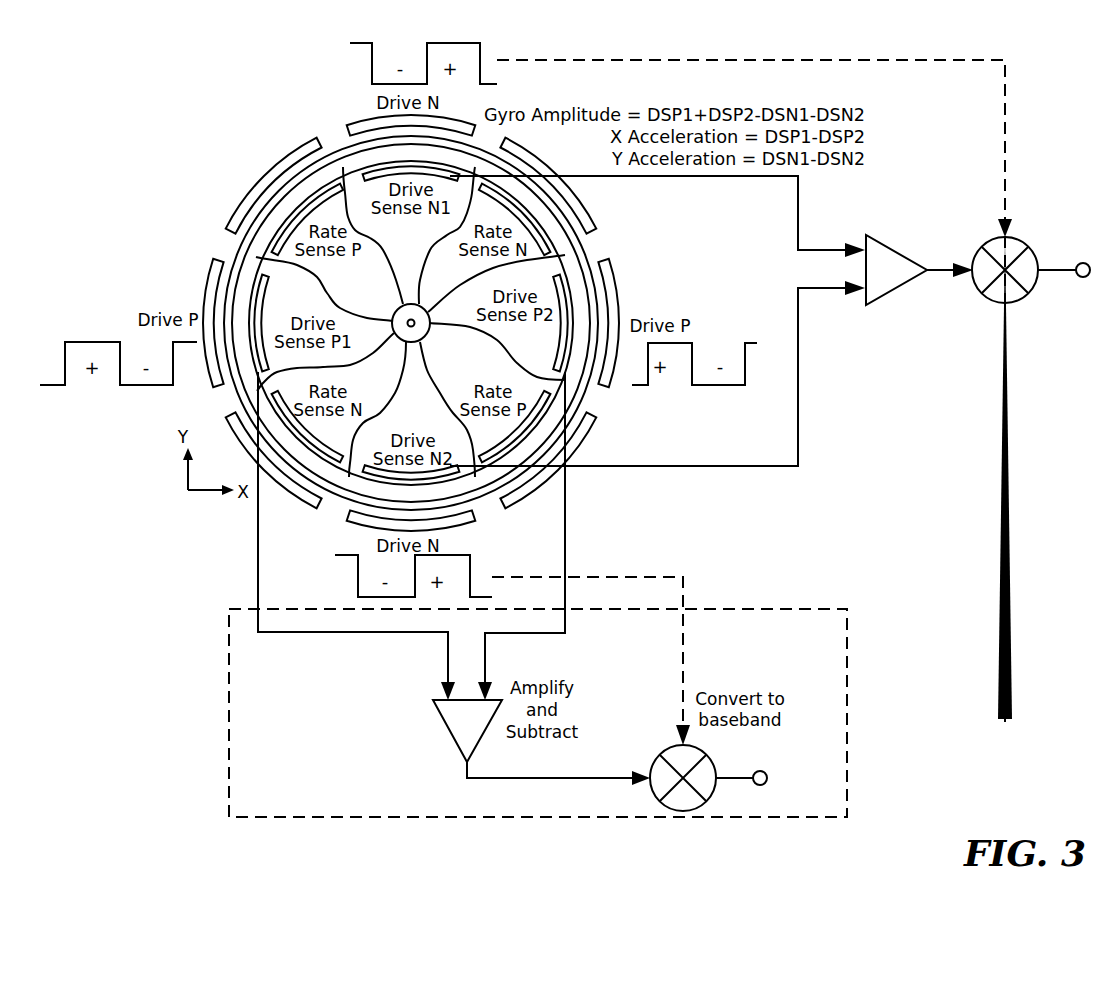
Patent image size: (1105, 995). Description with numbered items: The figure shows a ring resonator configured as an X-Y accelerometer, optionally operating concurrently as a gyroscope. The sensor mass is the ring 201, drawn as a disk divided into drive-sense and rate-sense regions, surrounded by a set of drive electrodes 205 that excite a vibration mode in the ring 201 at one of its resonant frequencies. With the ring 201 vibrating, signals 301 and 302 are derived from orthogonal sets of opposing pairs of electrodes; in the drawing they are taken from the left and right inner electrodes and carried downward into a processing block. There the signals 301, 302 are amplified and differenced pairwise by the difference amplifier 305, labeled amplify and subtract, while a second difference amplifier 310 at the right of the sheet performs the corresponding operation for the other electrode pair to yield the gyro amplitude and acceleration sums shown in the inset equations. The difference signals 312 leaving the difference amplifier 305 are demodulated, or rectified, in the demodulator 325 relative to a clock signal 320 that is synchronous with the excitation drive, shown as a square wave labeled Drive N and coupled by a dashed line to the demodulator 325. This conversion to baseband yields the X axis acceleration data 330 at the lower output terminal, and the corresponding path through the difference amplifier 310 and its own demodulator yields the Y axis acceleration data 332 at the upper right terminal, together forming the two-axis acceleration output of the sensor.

The ring 201 is at (243, 258).
The drive electrodes 205 is at (358, 122).
The signal 301 is at (256, 545).
The signal 302 is at (568, 556).
The difference amplifier 305 is at (448, 728).
The difference amplifier 310 is at (903, 254).
The difference signals 312 is at (582, 780).
The clock signal 320 is at (345, 557).
The demodulator 325 is at (683, 812).
The X axis acceleration data 330 is at (761, 786).
The Y axis acceleration data 332 is at (1078, 263).